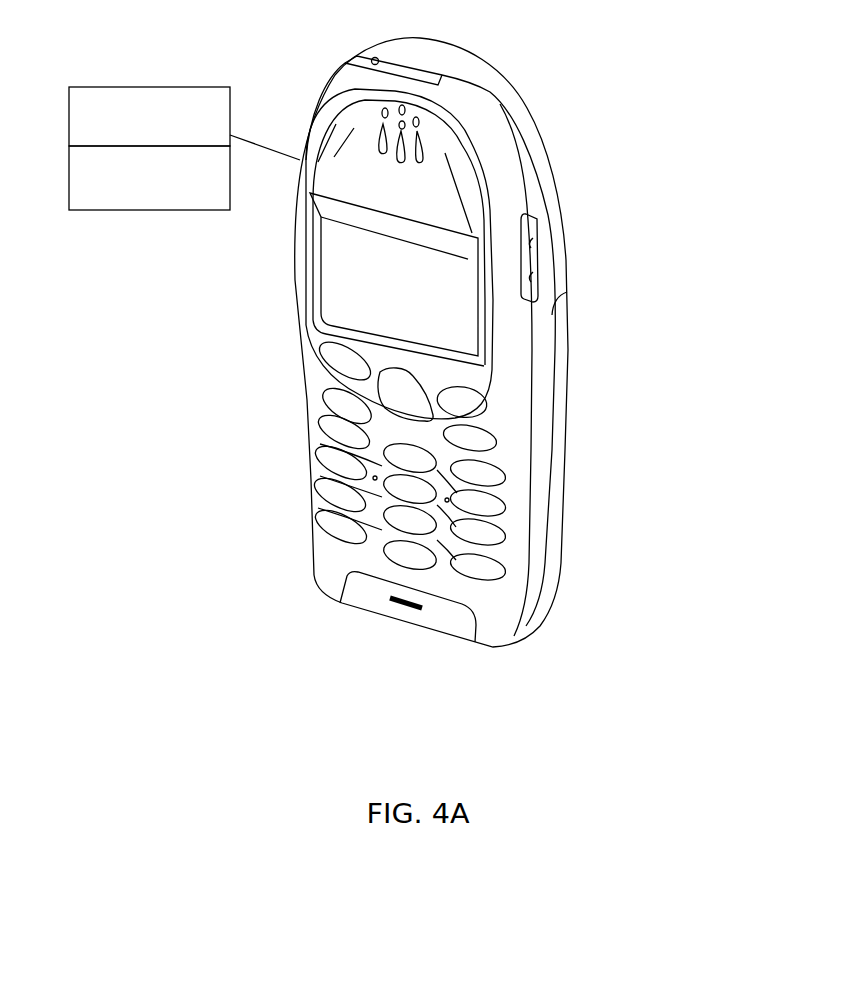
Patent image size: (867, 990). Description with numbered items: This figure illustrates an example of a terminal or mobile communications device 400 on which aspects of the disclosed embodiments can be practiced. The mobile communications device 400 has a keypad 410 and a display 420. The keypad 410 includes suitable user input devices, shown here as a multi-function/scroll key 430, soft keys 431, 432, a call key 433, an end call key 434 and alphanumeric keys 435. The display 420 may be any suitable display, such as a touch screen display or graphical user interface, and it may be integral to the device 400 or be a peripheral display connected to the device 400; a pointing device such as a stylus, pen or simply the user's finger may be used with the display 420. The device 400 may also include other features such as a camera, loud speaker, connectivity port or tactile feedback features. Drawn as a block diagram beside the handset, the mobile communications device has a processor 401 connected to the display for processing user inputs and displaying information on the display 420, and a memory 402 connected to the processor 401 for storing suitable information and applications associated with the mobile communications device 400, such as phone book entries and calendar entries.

The mobile communications device 400 is at (520, 48).
The processor 401 is at (146, 87).
The memory 402 is at (146, 210).
The keypad 410 is at (495, 583).
The display 420 is at (447, 314).
The multi-function/scroll key 430 is at (417, 401).
The soft key 431 is at (343, 363).
The soft key 432 is at (472, 400).
The call key 433 is at (343, 400).
The end call key 434 is at (472, 440).
The alphanumeric keys 435 is at (345, 530).